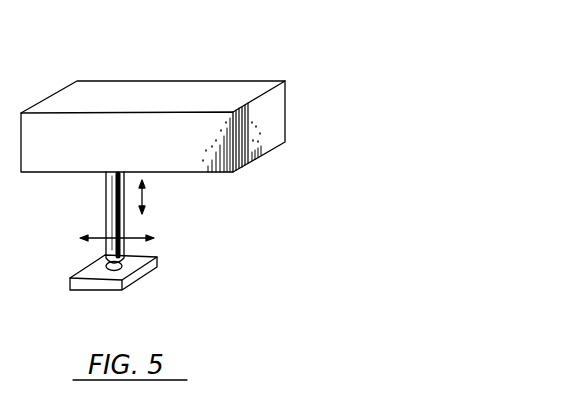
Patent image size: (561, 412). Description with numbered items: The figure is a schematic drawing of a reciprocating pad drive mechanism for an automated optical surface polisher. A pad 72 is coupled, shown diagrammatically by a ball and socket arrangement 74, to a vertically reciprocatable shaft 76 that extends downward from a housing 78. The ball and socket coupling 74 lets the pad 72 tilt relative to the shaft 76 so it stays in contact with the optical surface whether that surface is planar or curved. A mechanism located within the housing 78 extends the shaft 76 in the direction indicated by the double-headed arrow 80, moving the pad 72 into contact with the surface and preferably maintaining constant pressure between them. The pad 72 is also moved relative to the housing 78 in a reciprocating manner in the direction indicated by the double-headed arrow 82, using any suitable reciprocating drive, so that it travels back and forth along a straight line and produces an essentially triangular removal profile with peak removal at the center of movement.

The pad 72 is at (138, 273).
The ball and socket arrangement 74 is at (93, 257).
The vertically reciprocatable shaft 76 is at (106, 193).
The housing 78 is at (215, 87).
The double-headed arrow 80 is at (146, 200).
The double-headed arrow 82 is at (100, 237).